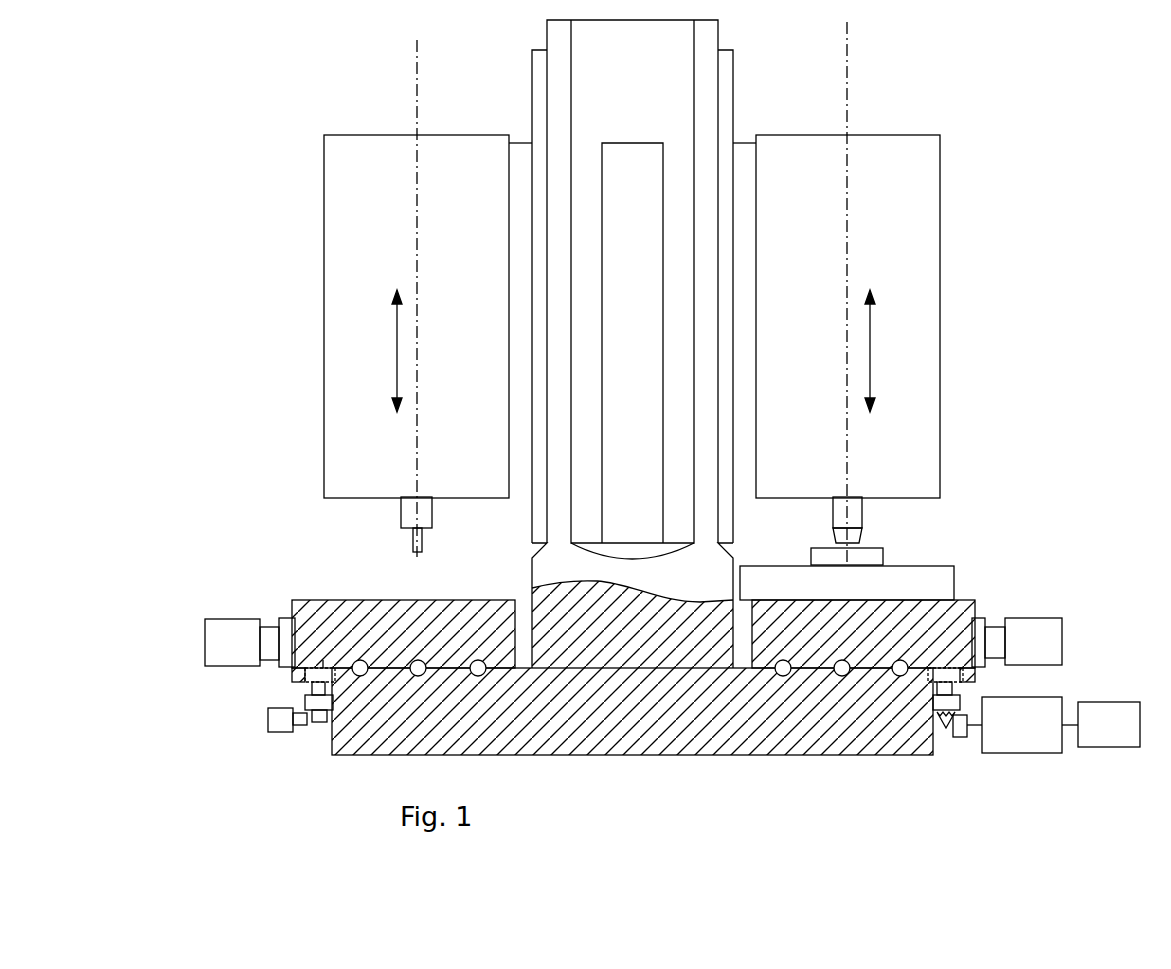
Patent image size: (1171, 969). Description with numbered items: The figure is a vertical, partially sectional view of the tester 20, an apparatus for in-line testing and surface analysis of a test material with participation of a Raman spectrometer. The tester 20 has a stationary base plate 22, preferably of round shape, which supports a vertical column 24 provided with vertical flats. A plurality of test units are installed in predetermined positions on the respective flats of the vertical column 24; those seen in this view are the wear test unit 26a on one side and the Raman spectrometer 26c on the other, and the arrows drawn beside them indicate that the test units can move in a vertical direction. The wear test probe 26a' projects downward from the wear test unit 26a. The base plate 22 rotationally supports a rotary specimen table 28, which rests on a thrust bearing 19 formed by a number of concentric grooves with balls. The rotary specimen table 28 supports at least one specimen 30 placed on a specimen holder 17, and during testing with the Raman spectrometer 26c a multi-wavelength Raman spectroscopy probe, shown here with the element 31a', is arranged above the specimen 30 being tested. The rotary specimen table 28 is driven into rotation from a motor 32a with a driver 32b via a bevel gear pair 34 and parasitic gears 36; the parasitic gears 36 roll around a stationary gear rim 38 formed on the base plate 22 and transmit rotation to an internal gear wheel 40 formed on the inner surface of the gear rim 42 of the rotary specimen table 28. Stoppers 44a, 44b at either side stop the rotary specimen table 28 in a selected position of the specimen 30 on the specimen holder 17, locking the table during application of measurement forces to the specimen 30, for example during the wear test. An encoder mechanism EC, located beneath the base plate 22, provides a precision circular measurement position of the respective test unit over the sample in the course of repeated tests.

The tester 20 is at (1003, 60).
The vertical column 24 is at (748, 80).
The wear test unit 26a is at (357, 298).
The Raman spectrometer 26c is at (918, 163).
The wear test probe 26a' is at (303, 480).
The specimen 30 is at (885, 557).
The workpiece 31a' is at (936, 462).
The specimen holder 17 is at (915, 572).
The rotary specimen table 28 is at (980, 598).
The stationary base plate 22 is at (703, 733).
The thrust bearing 19 is at (784, 690).
The stopper 44a is at (230, 603).
The stopper 44b is at (1070, 612).
The stationary gear rim 38 is at (323, 660).
The internal gear wheel 40 is at (305, 683).
The gear rim 42 is at (305, 677).
The encoder mechanism EC is at (303, 735).
The parasitic gears 36 is at (957, 688).
The bevel gear pair 34 is at (950, 728).
The motor 32a is at (1043, 732).
The driver 32b is at (1100, 750).